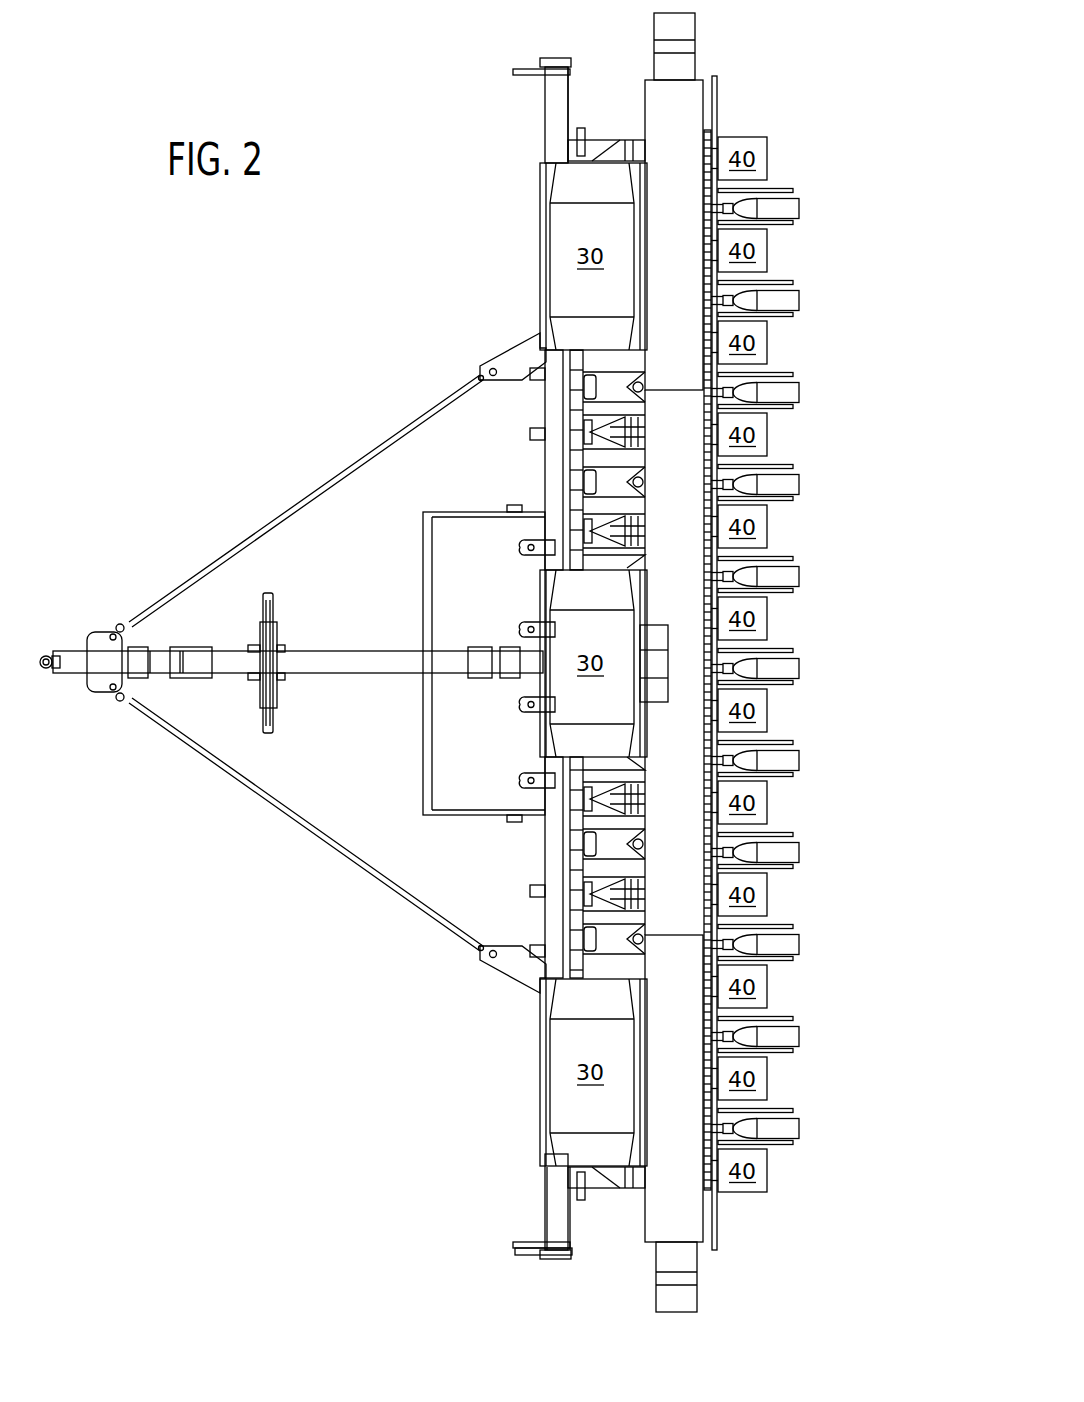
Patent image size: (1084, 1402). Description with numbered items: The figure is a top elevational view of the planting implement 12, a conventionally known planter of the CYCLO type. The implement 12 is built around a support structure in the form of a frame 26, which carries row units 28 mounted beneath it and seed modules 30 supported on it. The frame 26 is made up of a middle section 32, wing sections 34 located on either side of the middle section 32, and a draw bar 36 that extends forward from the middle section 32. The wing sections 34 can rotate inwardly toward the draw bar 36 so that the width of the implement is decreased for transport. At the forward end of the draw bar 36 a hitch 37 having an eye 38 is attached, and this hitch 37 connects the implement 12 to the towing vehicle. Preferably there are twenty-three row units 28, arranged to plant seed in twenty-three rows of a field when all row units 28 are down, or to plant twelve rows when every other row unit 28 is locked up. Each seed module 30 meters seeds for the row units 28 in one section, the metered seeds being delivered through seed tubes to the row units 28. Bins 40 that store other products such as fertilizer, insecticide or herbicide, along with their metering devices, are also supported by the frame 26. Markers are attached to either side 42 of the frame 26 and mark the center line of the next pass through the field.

The implement 12 is at (401, 236).
The frame 26 is at (547, 1222).
The row units 28 is at (793, 665).
The seed modules 30 is at (593, 664).
The middle section 32 is at (547, 492).
The wing sections 34 is at (546, 100).
The draw bar 36 is at (278, 690).
The hitch 37 is at (46, 655).
The eye 38 is at (46, 671).
The bins 40 is at (739, 664).
The side of frame 42 is at (569, 87).